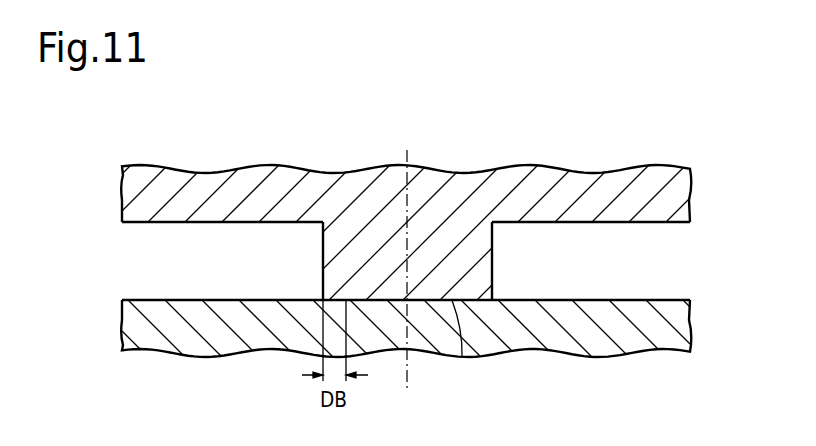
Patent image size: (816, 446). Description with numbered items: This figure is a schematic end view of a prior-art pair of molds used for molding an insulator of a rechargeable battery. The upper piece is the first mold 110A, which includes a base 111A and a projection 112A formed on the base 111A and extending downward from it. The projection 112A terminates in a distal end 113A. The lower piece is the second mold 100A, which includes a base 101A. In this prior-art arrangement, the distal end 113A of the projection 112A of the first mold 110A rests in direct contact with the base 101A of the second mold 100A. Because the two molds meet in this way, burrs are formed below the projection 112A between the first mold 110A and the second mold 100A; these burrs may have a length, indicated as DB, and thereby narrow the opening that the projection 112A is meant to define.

The first mold 110A is at (680, 183).
The base 111A is at (643, 223).
The projection 112A is at (493, 266).
The base 101A is at (657, 296).
The second mold 100A is at (690, 330).
The distal end 113A is at (462, 357).